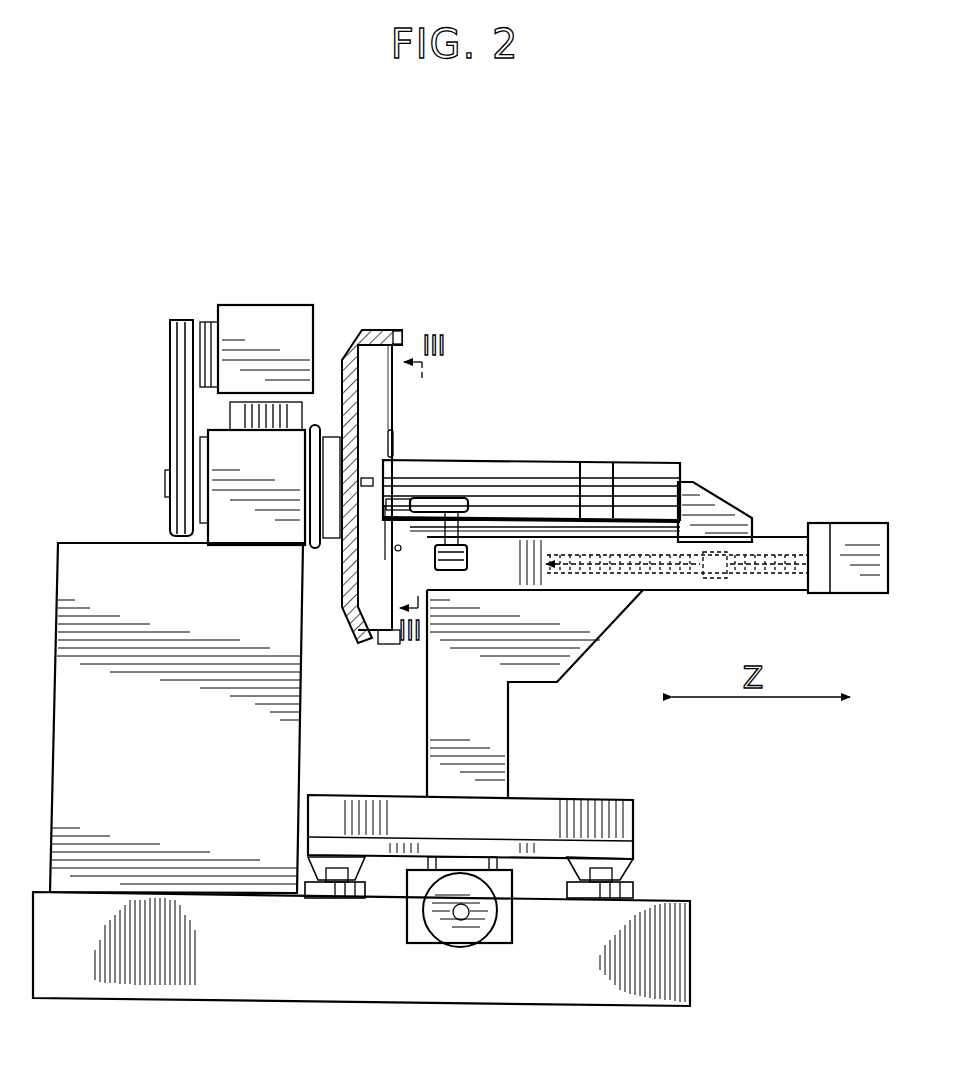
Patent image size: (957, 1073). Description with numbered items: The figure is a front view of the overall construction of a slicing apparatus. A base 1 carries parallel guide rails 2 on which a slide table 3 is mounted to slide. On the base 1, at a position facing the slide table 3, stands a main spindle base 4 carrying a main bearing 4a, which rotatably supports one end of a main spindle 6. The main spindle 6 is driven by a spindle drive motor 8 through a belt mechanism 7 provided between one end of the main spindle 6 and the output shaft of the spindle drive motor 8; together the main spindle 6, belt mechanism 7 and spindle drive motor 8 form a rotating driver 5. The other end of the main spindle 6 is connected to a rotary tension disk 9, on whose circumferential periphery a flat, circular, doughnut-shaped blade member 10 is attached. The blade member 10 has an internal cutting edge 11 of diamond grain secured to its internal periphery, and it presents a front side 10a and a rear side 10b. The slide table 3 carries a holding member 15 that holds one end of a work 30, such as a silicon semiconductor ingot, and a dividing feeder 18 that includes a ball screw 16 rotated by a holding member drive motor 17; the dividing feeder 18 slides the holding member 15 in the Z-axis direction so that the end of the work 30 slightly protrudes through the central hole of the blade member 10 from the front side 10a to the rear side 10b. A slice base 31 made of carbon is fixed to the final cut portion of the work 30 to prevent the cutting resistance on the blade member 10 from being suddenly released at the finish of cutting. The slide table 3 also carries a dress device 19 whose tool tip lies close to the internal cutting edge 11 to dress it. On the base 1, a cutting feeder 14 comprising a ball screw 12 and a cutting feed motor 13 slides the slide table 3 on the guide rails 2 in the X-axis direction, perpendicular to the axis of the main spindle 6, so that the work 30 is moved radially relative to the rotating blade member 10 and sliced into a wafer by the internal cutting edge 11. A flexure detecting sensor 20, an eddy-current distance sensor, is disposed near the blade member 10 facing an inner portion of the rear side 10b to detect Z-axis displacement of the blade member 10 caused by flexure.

The base 1 is at (676, 957).
The guide rails 2 is at (338, 879).
The slide table 3 is at (482, 732).
The main spindle base 4 is at (82, 813).
The main bearing 4a is at (247, 546).
The rotating driver 5 is at (198, 397).
The main spindle 6 is at (341, 420).
The belt mechanism 7 is at (166, 418).
The spindle drive motor 8 is at (258, 305).
The tension disk 9 is at (380, 333).
The blade member 10 is at (422, 431).
The front side 10a is at (394, 396).
The rear side 10b is at (357, 331).
The internal cutting edge 11 is at (394, 434).
The ball screw 12 is at (470, 918).
The cutting feed motor 13 is at (451, 961).
The cutting feeder 14 is at (653, 847).
The holding member 15 is at (738, 493).
The ball screw 16 is at (664, 575).
The holding member drive motor 17 is at (865, 521).
The dividing feeder 18 is at (812, 602).
The dress device 19 is at (473, 520).
The flexure detecting sensor 20 is at (368, 478).
The work 30 is at (531, 472).
The slice base 31 is at (562, 483).